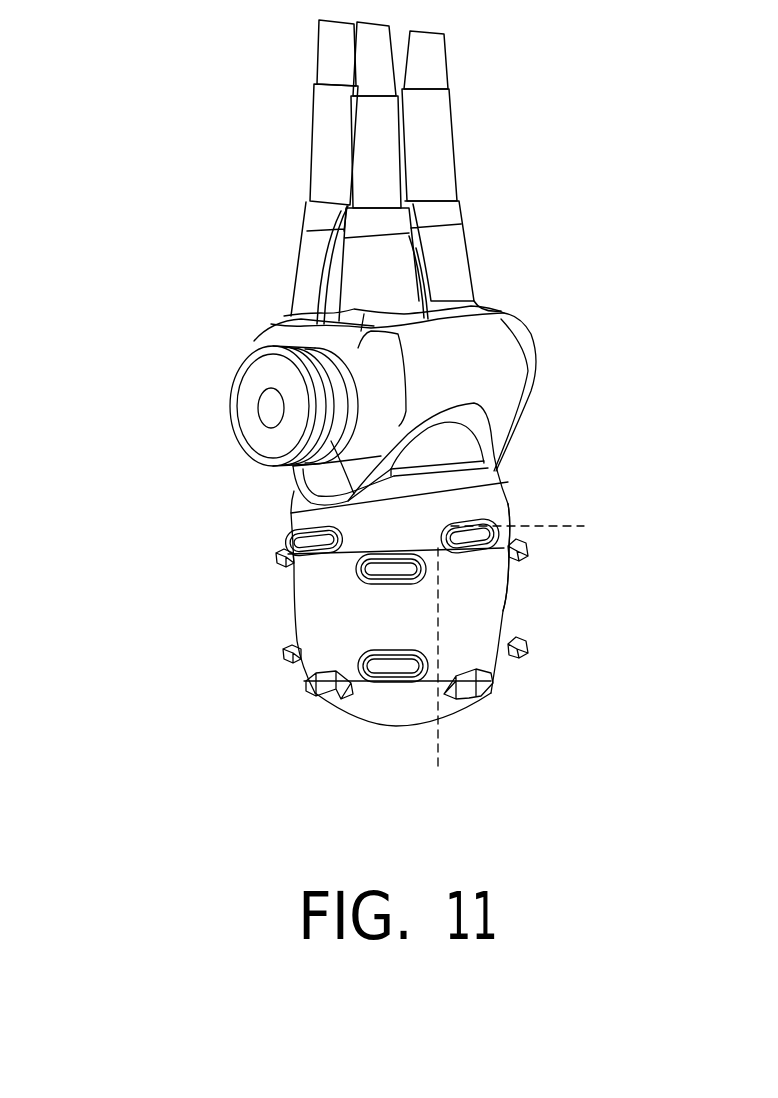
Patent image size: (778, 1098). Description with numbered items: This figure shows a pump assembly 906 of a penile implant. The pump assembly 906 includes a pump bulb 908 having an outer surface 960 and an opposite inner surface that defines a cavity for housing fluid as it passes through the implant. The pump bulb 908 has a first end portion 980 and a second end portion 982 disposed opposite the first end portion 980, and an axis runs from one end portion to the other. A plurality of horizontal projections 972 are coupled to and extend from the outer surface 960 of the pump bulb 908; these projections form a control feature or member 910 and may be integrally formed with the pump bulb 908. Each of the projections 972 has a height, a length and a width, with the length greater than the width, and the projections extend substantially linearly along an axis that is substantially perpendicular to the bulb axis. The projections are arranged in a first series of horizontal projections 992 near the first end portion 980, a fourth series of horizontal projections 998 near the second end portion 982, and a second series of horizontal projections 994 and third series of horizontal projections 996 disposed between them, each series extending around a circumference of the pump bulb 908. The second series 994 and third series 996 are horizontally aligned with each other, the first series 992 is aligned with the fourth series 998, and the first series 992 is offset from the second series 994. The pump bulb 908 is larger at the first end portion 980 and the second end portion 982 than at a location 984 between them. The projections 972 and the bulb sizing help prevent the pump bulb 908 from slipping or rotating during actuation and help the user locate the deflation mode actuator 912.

The pump assembly 906 is at (127, 458).
The deflation mode actuator 912 is at (250, 407).
The first end portion 980 is at (483, 498).
The outer surface 960 is at (490, 508).
The fourth series of horizontal projections 998 is at (287, 523).
The third series of horizontal projections 996 is at (280, 552).
The horizontal projections 972 is at (292, 572).
The second series of horizontal projections 994 is at (282, 656).
The first series of horizontal projections 992 is at (317, 692).
The second end portion 982 is at (457, 713).
The pump bulb 908 is at (497, 688).
The location 984 is at (505, 593).
The control feature or member 910 is at (527, 548).